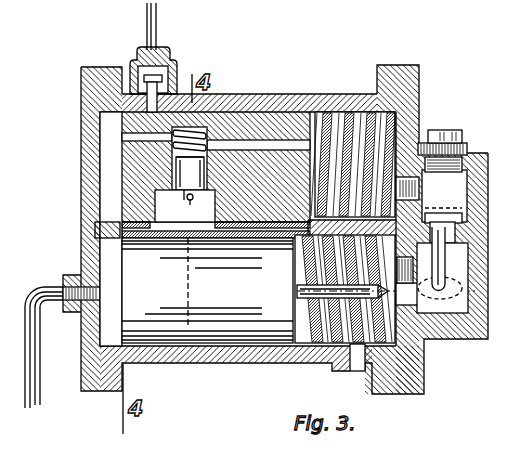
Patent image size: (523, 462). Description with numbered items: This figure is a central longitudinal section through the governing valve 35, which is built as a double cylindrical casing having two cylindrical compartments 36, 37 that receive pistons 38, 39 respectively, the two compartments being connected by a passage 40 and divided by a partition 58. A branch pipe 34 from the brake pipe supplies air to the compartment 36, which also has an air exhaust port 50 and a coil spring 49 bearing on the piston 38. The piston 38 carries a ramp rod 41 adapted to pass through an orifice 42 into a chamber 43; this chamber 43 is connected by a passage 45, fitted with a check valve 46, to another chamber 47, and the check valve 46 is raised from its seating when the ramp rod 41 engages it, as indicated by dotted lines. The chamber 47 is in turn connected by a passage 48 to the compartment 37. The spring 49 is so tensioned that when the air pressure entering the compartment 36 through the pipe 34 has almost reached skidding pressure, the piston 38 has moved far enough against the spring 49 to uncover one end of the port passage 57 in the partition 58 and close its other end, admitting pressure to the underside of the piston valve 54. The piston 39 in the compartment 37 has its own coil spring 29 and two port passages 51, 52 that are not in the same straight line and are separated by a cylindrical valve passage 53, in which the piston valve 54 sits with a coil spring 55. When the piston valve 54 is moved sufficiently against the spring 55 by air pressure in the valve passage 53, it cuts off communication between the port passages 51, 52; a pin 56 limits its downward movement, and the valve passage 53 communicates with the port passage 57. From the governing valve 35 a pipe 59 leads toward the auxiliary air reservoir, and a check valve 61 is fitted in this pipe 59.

The coil spring 29 is at (362, 118).
The pipe 34 is at (39, 351).
The governing valve 35 is at (82, 202).
The cylindrical compartment 36 is at (318, 363).
The cylindrical compartment 37 is at (384, 120).
The piston 38 is at (207, 290).
The piston 39 is at (297, 118).
The passage 40 is at (112, 243).
The ramp rod 41 is at (463, 297).
The orifice 42 is at (407, 281).
The chamber 43 is at (449, 259).
The passage 45 is at (448, 244).
The check valve 46 is at (455, 213).
The chamber 47 is at (444, 190).
The passage 48 is at (415, 190).
The coil spring 49 is at (305, 301).
The air exhaust port 50 is at (357, 369).
The port passage 51 is at (133, 137).
The port passage 52 is at (258, 147).
The cylindrical valve passage 53 is at (185, 206).
The piston valve 54 is at (189, 158).
The coil spring 55 is at (207, 101).
The pin 56 is at (192, 201).
The port passage 57 is at (240, 252).
The partition 58 is at (307, 260).
The pipe 59 is at (157, 30).
The check valve 61 is at (158, 75).